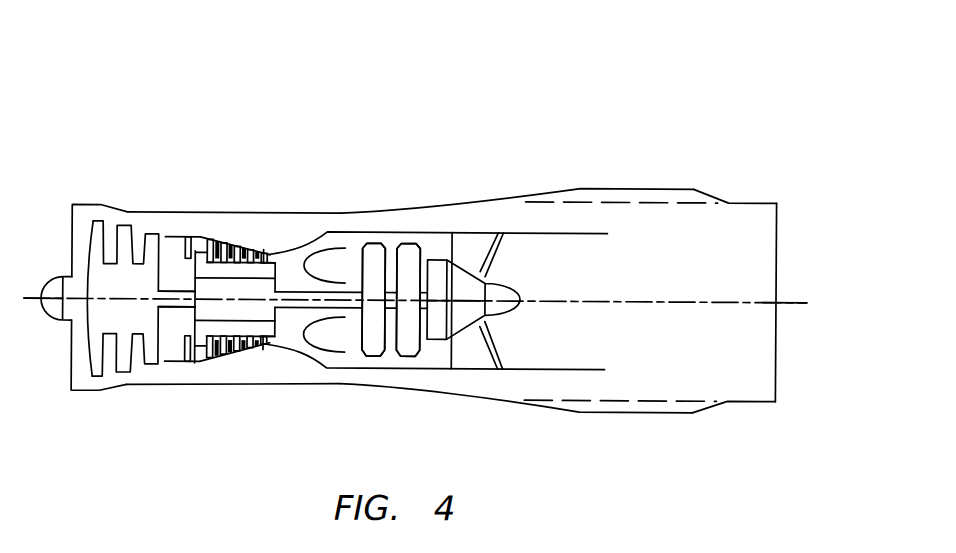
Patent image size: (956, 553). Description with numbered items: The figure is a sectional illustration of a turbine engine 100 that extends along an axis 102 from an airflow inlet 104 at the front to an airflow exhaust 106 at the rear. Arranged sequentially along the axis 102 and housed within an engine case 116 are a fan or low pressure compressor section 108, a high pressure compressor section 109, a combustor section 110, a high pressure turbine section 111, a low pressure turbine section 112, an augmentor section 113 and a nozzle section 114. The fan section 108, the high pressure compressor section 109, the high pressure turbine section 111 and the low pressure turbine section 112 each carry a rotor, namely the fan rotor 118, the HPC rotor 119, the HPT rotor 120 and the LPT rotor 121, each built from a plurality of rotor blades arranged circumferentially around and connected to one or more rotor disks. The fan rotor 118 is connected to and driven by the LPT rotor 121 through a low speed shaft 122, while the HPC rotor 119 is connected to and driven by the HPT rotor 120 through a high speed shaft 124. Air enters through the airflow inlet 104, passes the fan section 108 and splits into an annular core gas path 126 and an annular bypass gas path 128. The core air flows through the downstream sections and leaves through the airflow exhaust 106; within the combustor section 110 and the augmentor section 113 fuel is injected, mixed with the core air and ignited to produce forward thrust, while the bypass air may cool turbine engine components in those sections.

The turbine engine 100 is at (139, 87).
The axis 102 is at (796, 298).
The airflow inlet 104 is at (70, 374).
The airflow exhaust 106 is at (776, 366).
The fan or low pressure compressor (LPC) section 108 is at (122, 223).
The high pressure compressor (HPC) section 109 is at (230, 236).
The combustor section 110 is at (328, 236).
The high pressure turbine (HPT) section 111 is at (372, 230).
The low pressure turbine (LPT) section 112 is at (408, 230).
The augmentor section 113 is at (473, 235).
The nozzle section 114 is at (622, 186).
The engine case 116 is at (675, 186).
The fan (or LPC) rotor 118 is at (118, 382).
The HPC rotor 119 is at (202, 361).
The HPT rotor 120 is at (372, 354).
The LPT rotor 121 is at (409, 354).
The low speed shaft 122 is at (170, 308).
The high speed shaft 124 is at (290, 306).
The annular core gas path 126 is at (292, 267).
The annular bypass gas path 128 is at (165, 222).